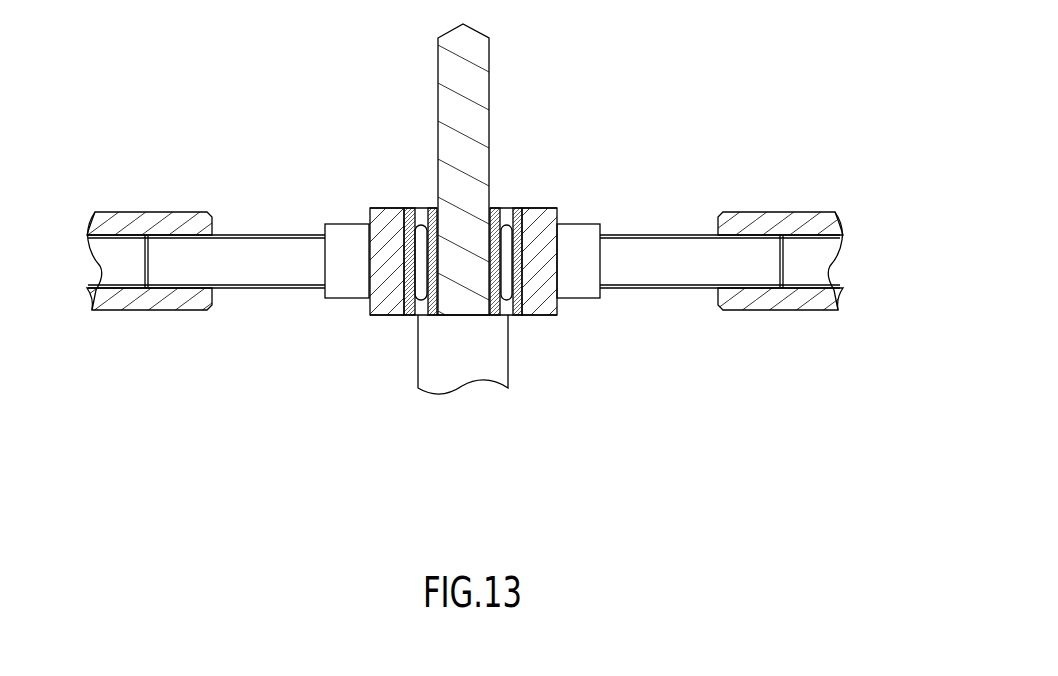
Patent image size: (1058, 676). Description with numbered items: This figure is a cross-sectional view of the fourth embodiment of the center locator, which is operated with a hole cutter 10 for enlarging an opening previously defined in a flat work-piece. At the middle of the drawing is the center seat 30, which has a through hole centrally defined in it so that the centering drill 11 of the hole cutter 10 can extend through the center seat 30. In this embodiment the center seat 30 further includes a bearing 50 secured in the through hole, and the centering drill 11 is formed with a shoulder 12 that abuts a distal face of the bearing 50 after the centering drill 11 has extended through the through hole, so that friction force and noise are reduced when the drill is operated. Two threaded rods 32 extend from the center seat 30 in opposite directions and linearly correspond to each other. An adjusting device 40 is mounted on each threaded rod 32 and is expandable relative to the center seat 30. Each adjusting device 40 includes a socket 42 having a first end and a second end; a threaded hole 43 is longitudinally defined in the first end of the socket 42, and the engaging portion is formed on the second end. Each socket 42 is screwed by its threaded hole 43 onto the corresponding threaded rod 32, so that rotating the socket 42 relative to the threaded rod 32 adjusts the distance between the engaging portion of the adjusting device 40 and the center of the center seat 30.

The hole cutter 10 is at (399, 364).
The centering drill 11 is at (489, 99).
The shoulder 12 is at (497, 306).
The center seat 30 is at (395, 208).
The threaded rod 32 is at (255, 236).
The adjusting device 40 is at (813, 324).
The socket 42 is at (170, 313).
The threaded hole 43 is at (113, 238).
The bearing 50 is at (423, 208).